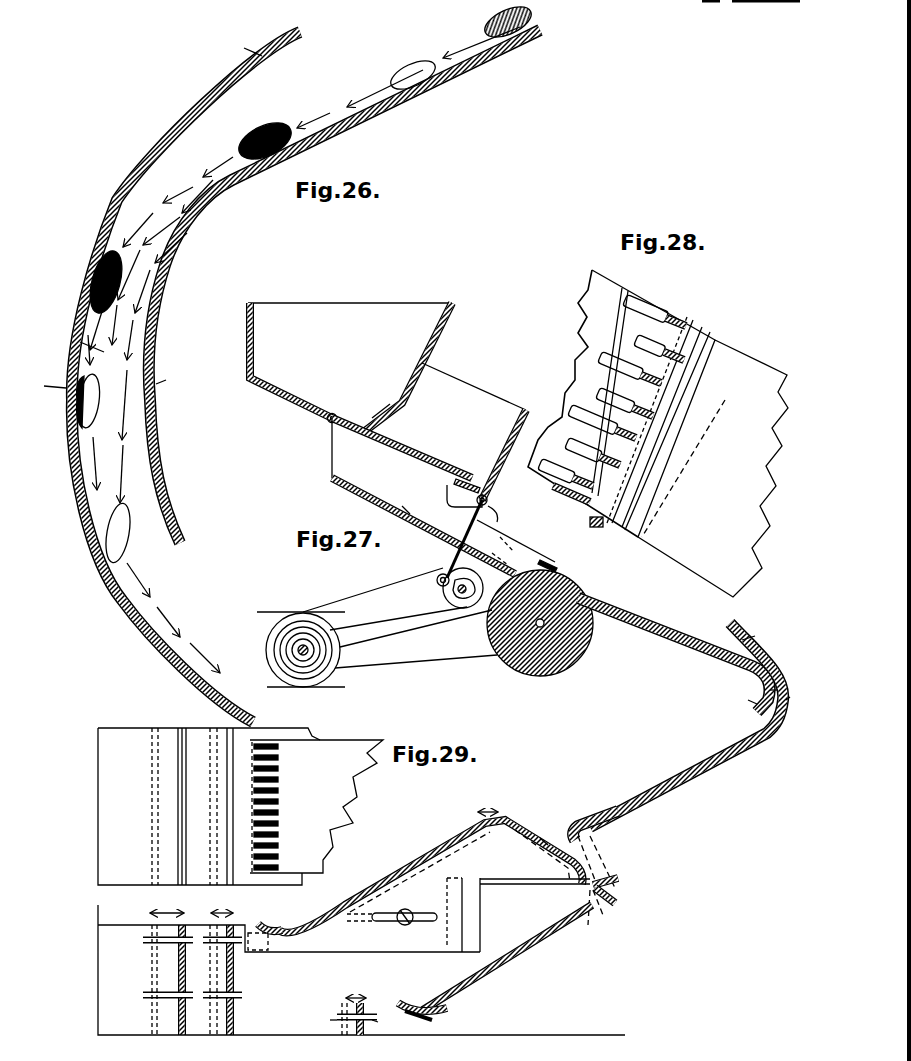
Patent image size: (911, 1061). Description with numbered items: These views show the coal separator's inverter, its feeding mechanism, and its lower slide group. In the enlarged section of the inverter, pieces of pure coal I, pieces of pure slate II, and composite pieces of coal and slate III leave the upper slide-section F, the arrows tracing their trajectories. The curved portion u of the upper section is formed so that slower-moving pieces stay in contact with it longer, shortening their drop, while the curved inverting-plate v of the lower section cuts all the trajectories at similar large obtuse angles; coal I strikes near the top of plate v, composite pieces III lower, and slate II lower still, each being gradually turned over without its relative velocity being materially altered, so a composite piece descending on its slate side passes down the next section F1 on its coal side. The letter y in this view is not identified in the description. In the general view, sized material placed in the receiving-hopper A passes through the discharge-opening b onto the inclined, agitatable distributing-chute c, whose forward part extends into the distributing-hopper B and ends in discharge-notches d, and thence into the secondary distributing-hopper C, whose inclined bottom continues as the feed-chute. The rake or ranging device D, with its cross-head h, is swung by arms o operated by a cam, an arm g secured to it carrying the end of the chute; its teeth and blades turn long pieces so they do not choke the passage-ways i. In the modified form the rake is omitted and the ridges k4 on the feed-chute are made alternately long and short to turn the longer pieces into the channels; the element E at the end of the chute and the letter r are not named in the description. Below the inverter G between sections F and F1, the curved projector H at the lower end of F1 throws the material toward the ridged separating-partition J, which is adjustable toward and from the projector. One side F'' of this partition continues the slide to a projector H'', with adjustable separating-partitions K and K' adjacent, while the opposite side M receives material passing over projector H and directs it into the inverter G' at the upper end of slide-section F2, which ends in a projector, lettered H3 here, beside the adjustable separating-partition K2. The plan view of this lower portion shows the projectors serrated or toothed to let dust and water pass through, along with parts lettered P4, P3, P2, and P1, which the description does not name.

In FIG. 26, the pieces of coal I is at (190, 207).
In FIG. 26, the pieces of pure slate II is at (270, 302).
In FIG. 26, the composite pieces of coal and slate III is at (313, 215).
In FIG. 26, the upper slide-section F is at (344, 284).
In FIG. 27, the upper slide-section F is at (674, 655).
In FIG. 28, the upper slide-section F is at (658, 433).
In FIG. 26, the slide-section F1 is at (186, 377).
In FIG. 27, the slide-section F1 is at (686, 725).
In FIG. 26, the inverter G is at (99, 354).
In FIG. 27, the inverter G is at (769, 697).
In FIG. 26, the curved portion of the upper section u is at (164, 381).
In FIG. 27, the curved portion of the upper section u is at (746, 697).
In FIG. 26, the inverting-plate v is at (46, 385).
In FIG. 27, the inverting-plate v is at (791, 699).
In FIG. 26, the chute wall y is at (245, 47).
In FIG. 27, the chute wall y is at (751, 635).
In FIG. 27, the receiving-hopper A is at (350, 367).
In FIG. 27, the distributing-hopper B is at (474, 434).
In FIG. 27, the secondary distributing-hopper C is at (423, 496).
In FIG. 27, the rake or ranging device D is at (517, 546).
In FIG. 28, the rake or ranging device D is at (590, 404).
In FIG. 27, the wheel E is at (540, 623).
In FIG. 28, the wheel E is at (650, 431).
In FIG. 27, the discharge-opening b is at (376, 409).
In FIG. 27, the distributing-chute c is at (402, 448).
In FIG. 27, the discharge-notches d is at (467, 476).
In FIG. 27, the arm g is at (455, 494).
In FIG. 27, the plate r is at (403, 503).
In FIG. 27, the arms o is at (469, 543).
In FIG. 27, the ridges k4 is at (516, 546).
In FIG. 28, the ridges k4 is at (570, 411).
In FIG. 28, the cross-head h is at (698, 320).
In FIG. 28, the passage-ways i is at (631, 407).
In FIG. 29, the plate P4 is at (133, 878).
In FIG. 29, the plate P3 is at (203, 879).
In FIG. 29, the plate P2 is at (321, 1017).
In FIG. 29, the plate P1 is at (384, 1021).
In FIG. 29, the side of the ridged separating-partition F'' is at (416, 836).
In FIG. 29, the projector H'' is at (274, 847).
In FIG. 29, the separating-partition K' is at (168, 881).
In FIG. 29, the separating-partition K is at (227, 881).
In FIG. 29, the separating-partition K2 is at (361, 1012).
In FIG. 29, the ridged separating-partition J is at (488, 800).
In FIG. 29, the side of the separating-ridge M is at (540, 832).
In FIG. 29, the curved projector H is at (595, 843).
In FIG. 29, the inverter G' is at (596, 901).
In FIG. 29, the slide-section F2 is at (507, 957).
In FIG. 29, the gate H3 is at (422, 998).